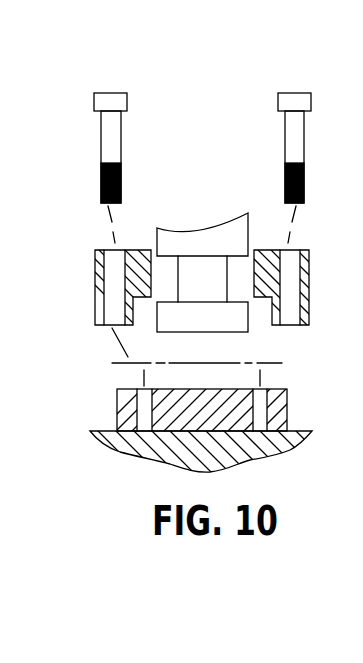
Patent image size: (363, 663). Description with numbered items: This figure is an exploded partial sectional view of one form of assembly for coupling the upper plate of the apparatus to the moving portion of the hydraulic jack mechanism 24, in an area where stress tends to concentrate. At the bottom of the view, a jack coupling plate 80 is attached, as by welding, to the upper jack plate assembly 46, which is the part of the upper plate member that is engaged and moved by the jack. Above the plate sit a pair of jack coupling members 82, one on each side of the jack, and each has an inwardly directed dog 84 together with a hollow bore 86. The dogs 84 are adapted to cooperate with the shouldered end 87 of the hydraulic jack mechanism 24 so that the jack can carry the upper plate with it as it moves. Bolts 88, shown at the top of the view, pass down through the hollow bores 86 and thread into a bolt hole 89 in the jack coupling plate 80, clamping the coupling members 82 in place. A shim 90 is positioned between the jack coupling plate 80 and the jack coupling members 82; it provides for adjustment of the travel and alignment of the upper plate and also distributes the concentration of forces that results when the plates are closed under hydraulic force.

The hydraulic jack mechanism 24 is at (207, 231).
The upper jack plate assembly 46 is at (290, 447).
The jack coupling plate 80 is at (200, 400).
The jack coupling member 82 is at (210, 290).
The inwardly directed dog 84 is at (126, 344).
The hollow bore 86 is at (105, 290).
The shouldered end 87 is at (212, 328).
The bolt 88 is at (112, 101).
The bolt hole 89 is at (242, 389).
The shim 90 is at (279, 364).